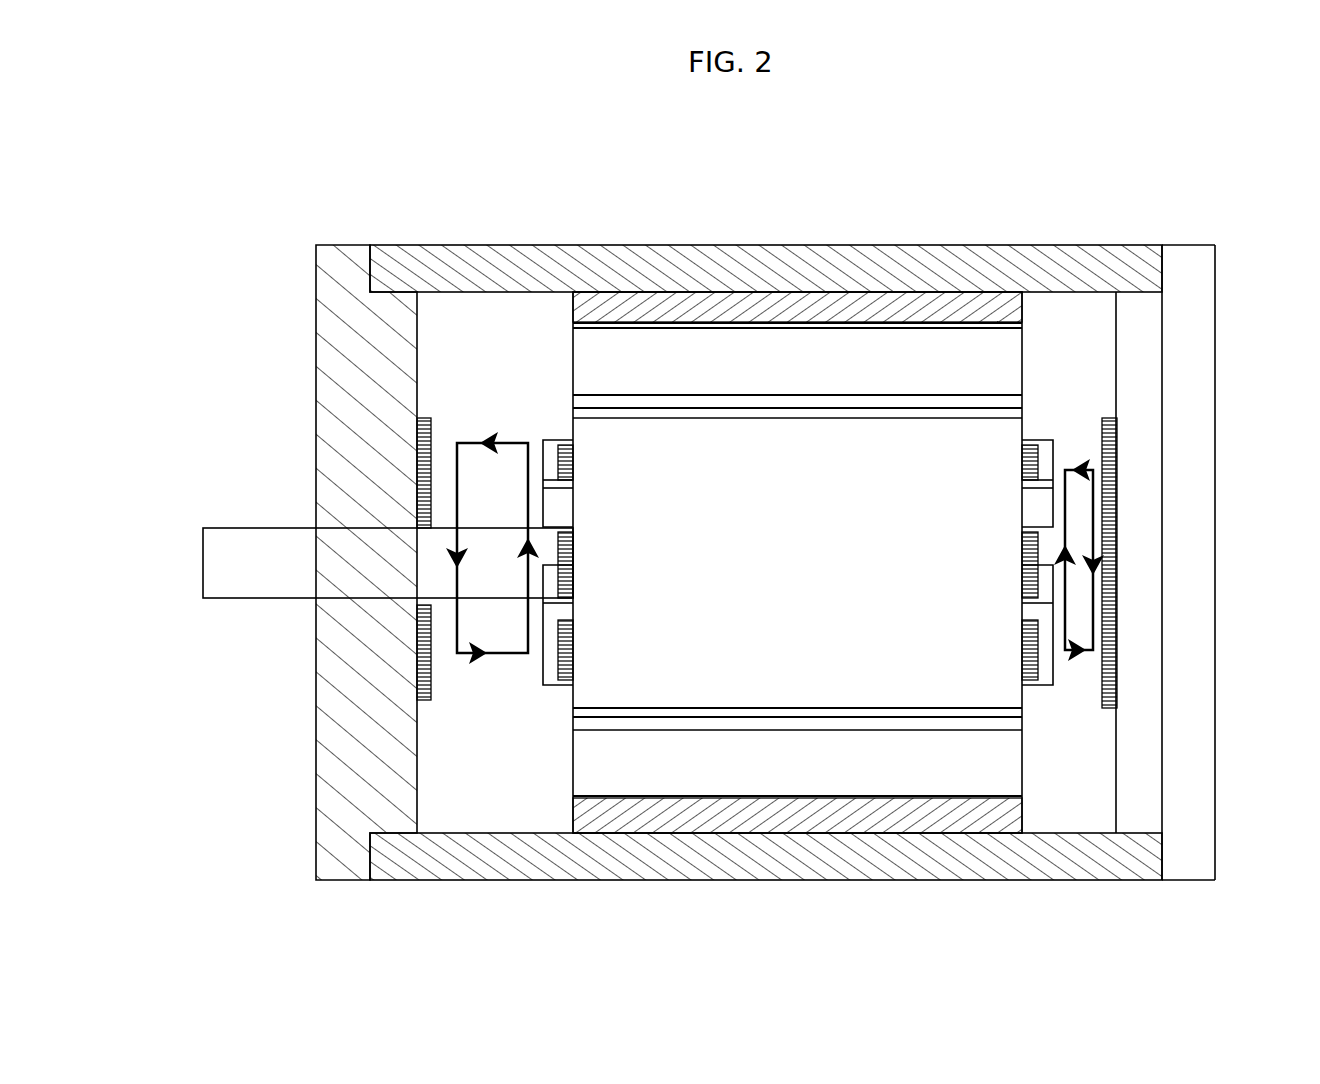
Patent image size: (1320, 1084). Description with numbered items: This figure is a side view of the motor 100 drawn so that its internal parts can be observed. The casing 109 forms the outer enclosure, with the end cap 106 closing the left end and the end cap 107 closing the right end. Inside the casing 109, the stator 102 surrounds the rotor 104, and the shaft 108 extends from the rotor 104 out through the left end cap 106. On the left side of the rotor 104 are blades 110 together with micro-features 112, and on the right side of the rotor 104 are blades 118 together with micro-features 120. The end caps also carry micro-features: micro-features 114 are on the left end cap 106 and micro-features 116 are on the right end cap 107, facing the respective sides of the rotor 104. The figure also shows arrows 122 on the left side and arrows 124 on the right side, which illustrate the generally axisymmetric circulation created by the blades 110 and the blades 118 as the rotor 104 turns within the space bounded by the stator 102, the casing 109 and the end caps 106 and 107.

The motor 100 is at (268, 103).
The stator 102 is at (643, 305).
The rotor 104 is at (731, 460).
The end cap 106 is at (340, 472).
The end cap 107 is at (1187, 308).
The shaft 108 is at (224, 567).
The casing 109 is at (511, 268).
The blades 110 is at (556, 603).
The micro-features 112 is at (570, 660).
The micro-features 114 is at (425, 420).
The micro-features 116 is at (1108, 680).
The blades 118 is at (1047, 600).
The micro-features 120 is at (1030, 455).
The arrows 122 is at (468, 442).
The arrows 124 is at (1095, 517).